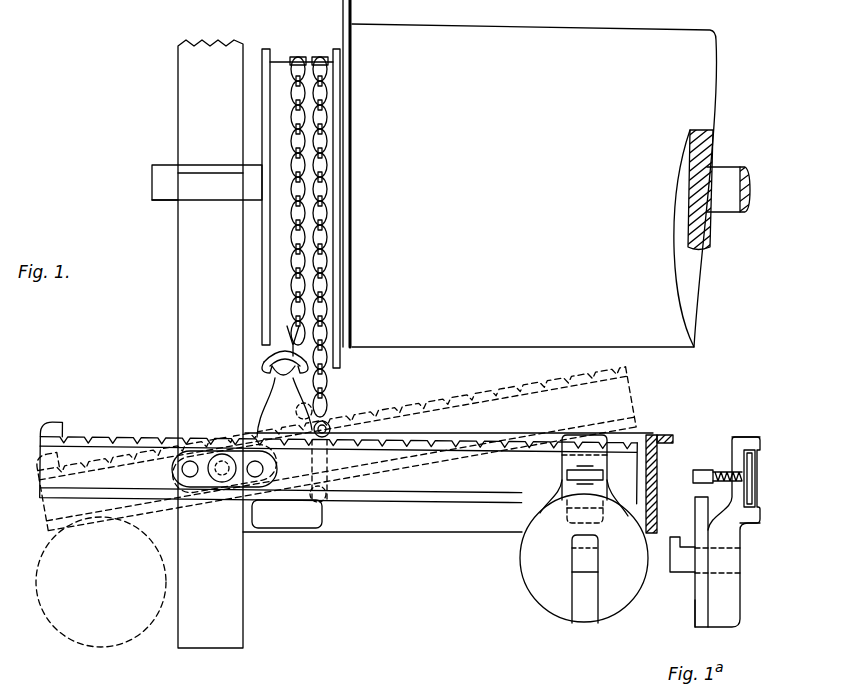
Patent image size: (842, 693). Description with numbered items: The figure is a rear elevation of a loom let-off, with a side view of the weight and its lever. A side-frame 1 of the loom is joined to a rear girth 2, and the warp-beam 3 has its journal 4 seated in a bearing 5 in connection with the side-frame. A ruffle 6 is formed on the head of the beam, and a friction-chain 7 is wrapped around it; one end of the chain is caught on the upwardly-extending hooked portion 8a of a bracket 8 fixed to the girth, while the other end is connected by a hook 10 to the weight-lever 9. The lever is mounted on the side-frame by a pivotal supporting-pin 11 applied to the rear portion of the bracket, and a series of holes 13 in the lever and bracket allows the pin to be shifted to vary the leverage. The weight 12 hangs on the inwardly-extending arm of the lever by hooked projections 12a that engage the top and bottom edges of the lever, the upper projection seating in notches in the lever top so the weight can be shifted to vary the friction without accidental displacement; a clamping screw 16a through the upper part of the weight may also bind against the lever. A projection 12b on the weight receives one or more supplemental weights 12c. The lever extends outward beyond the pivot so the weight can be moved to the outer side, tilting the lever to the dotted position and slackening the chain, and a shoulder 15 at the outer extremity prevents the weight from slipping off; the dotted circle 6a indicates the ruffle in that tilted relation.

In FIG. 1, the side-frame 1 is at (185, 355).
In FIG. 1, the rear girth 2 is at (432, 534).
In FIG. 1, the warp-beam 3 is at (343, 15).
In FIG. 1, the journal 4 is at (165, 165).
In FIG. 1, the bearing 5 is at (166, 202).
In FIG. 1, the ruffle 6 is at (276, 62).
In FIG. 1, the roll (dotted position) 6a is at (66, 486).
In FIG. 1, the friction-chain 7 is at (328, 188).
In FIG. 1, the bracket 8 is at (265, 412).
In FIG. 1, the hooked portion 8a is at (264, 356).
In FIG. 1, the weight-lever 9 is at (383, 503).
In FIG. 1A, the weight-lever 9 is at (757, 476).
In FIG. 1, the hook 10 is at (328, 424).
In FIG. 1, the pivotal supporting-pin 11 is at (222, 482).
In FIG. 1, the weight 12 is at (586, 612).
In FIG. 1A, the weight 12 is at (730, 600).
In FIG. 1A, the catch head lugs 12a is at (752, 437).
In FIG. 1, the projection 12b is at (580, 566).
In FIG. 1A, the projection 12b is at (682, 572).
In FIG. 1, the supplemental weight 12c is at (558, 606).
In FIG. 1A, the supplemental weight 12c is at (692, 620).
In FIG. 1, the holes 13 is at (176, 470).
In FIG. 1, the shoulder 15 is at (64, 424).
In FIG. 1, the clamping screw 16a is at (570, 474).
In FIG. 1A, the clamping screw 16a is at (700, 468).